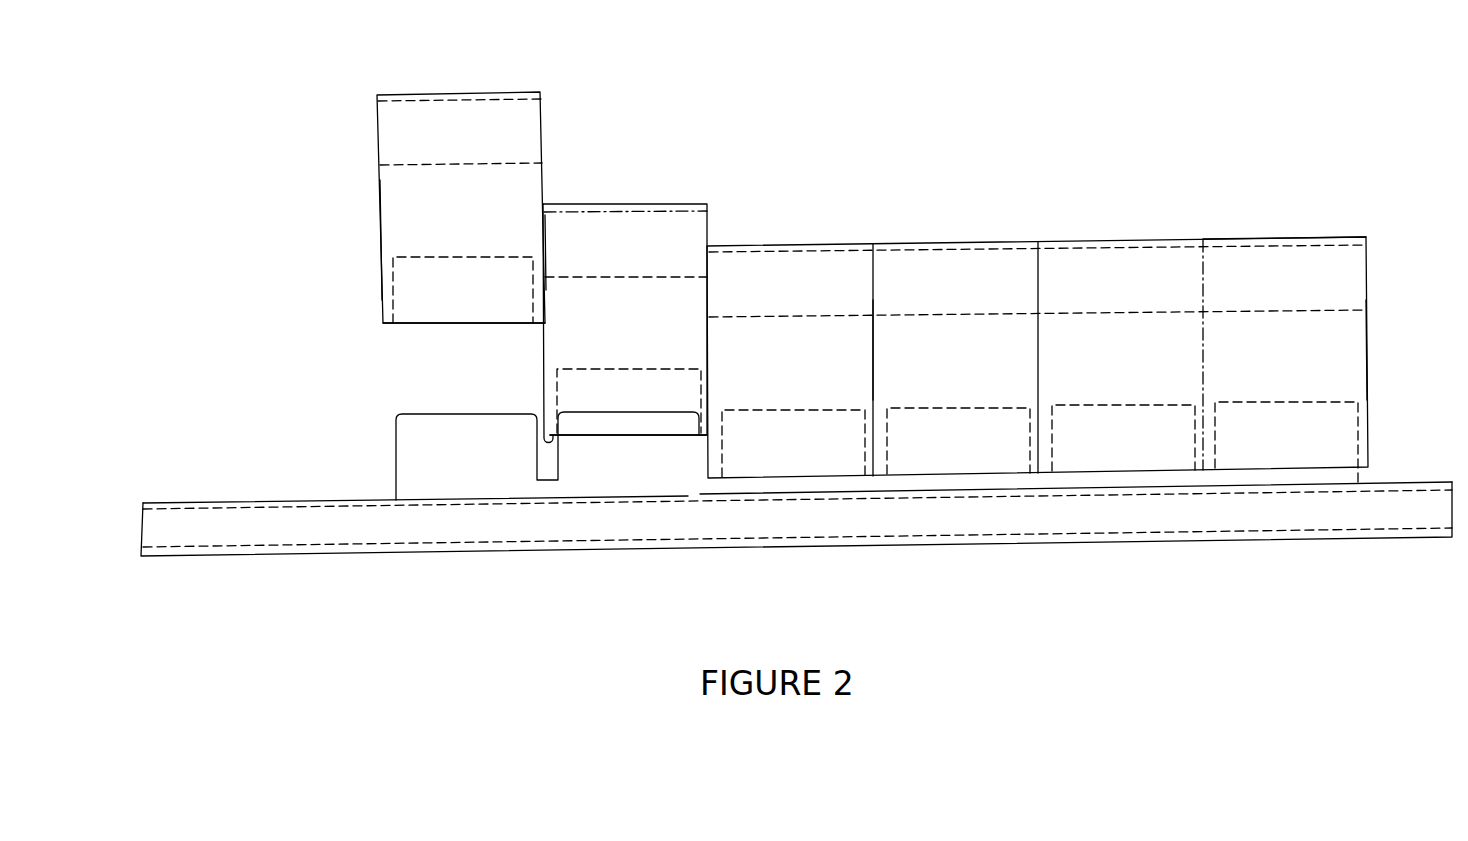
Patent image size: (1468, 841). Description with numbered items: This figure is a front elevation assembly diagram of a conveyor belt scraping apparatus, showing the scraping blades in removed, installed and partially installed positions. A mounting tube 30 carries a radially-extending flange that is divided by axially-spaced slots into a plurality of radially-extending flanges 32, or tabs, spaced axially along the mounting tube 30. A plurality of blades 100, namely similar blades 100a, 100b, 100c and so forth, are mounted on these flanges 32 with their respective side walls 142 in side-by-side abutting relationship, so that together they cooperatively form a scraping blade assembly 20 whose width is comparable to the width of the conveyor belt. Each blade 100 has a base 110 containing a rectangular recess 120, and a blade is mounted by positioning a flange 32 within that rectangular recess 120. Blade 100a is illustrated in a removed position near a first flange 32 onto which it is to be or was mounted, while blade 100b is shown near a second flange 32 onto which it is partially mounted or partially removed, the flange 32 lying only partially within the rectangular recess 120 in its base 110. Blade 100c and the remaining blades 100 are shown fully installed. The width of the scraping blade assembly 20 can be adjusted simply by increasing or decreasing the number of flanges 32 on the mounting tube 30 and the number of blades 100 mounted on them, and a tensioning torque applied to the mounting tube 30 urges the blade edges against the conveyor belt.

The scraping blade assembly 20 is at (1210, 80).
The mounting tube 30 is at (229, 489).
The flange 32 is at (395, 419).
The blade 100 is at (1268, 237).
The blade 100a is at (450, 93).
The blade 100b is at (612, 205).
The blade 100c is at (778, 246).
The base 110 is at (540, 324).
The rectangular recess 120 is at (422, 323).
The side wall 142 is at (381, 206).